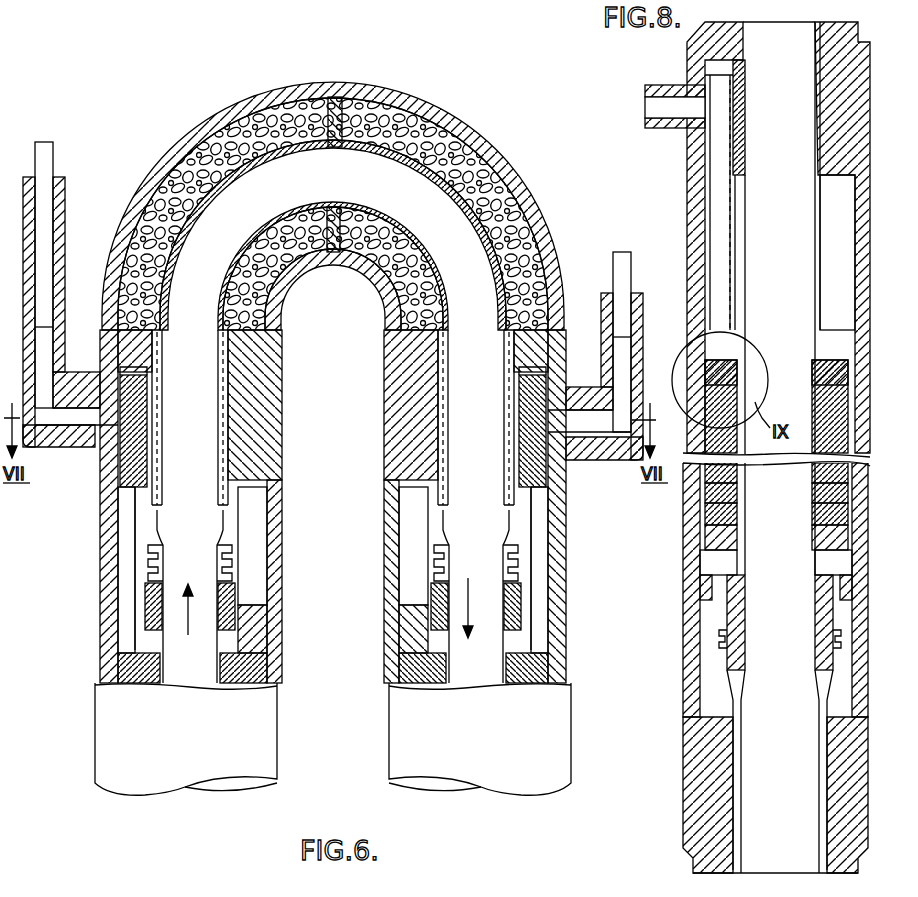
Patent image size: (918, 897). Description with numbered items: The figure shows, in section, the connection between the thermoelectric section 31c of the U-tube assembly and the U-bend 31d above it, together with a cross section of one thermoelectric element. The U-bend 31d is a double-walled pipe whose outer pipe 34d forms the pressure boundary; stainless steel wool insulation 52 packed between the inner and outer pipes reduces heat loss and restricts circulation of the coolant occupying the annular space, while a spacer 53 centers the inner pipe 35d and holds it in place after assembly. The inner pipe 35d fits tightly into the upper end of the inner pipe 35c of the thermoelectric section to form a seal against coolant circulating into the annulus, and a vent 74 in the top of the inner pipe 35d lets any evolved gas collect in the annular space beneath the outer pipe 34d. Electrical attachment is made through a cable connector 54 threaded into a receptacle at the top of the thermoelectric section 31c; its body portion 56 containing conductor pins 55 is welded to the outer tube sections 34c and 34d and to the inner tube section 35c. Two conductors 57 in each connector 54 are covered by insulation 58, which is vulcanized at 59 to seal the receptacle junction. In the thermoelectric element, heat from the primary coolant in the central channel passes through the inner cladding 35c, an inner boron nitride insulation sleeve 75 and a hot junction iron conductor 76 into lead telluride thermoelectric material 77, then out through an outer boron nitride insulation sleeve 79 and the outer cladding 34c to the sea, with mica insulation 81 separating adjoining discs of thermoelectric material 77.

In FIG. 6, the thermoelectric section 31c is at (212, 754).
In FIG. 8, the thermoelectric section 31c is at (676, 703).
In FIG. 6, the U-bend 31d is at (298, 198).
In FIG. 6, the outer tube section 34c is at (105, 632).
In FIG. 8, the outer tube section 34c is at (690, 580).
In FIG. 6, the outer pipe 34d is at (540, 192).
In FIG. 6, the inner pipe 35c is at (216, 530).
In FIG. 8, the inner pipe 35c is at (750, 232).
In FIG. 6, the inner pipe 35d is at (250, 228).
In FIG. 6, the stainless steel wool insulation 52 is at (433, 125).
In FIG. 6, the spacer 53 is at (336, 97).
In FIG. 6, the cable connector 54 is at (278, 432).
In FIG. 8, the cable connector 54 is at (670, 77).
In FIG. 6, the conductor pins 55 is at (125, 545).
In FIG. 8, the conductor pins 55 is at (715, 188).
In FIG. 6, the body portion 56 is at (280, 393).
In FIG. 6, the conductors 57 is at (50, 155).
In FIG. 6, the insulation 58 is at (65, 256).
In FIG. 6, the vulcanized seal 59 is at (95, 447).
In FIG. 6, the vent 74 is at (349, 207).
In FIG. 8, the inner boron nitride insulation sleeve 75 is at (742, 536).
In FIG. 8, the hot junction iron conductor 76 is at (745, 475).
In FIG. 8, the lead telluride thermoelectric material 77 is at (740, 512).
In FIG. 8, the outer boron nitride insulation sleeve 79 is at (700, 528).
In FIG. 8, the mica insulation 81 is at (748, 496).